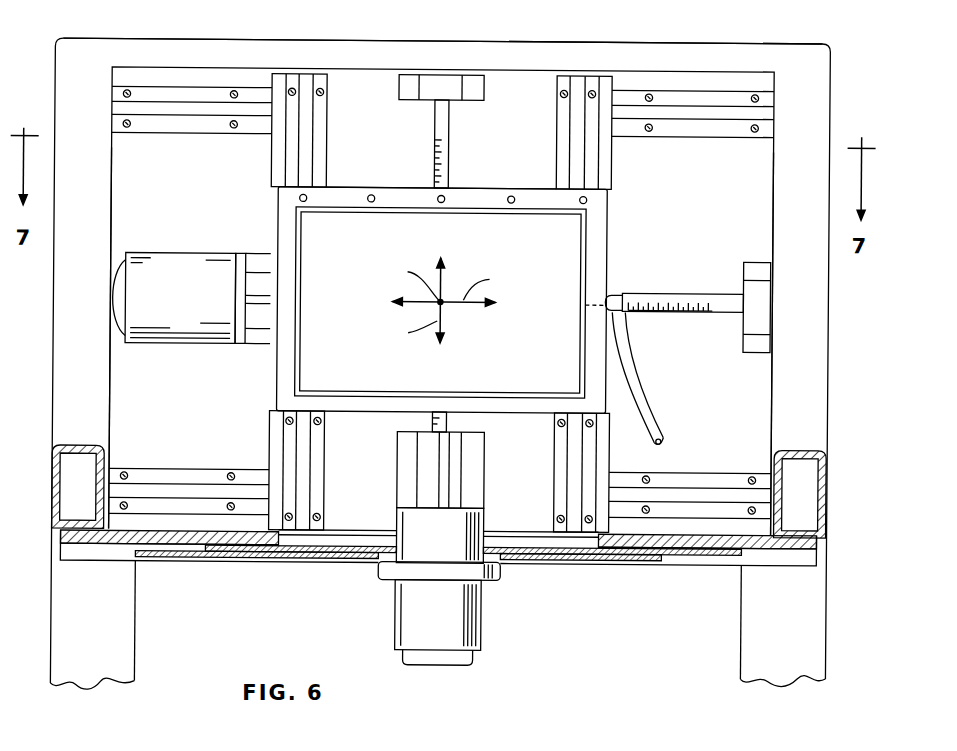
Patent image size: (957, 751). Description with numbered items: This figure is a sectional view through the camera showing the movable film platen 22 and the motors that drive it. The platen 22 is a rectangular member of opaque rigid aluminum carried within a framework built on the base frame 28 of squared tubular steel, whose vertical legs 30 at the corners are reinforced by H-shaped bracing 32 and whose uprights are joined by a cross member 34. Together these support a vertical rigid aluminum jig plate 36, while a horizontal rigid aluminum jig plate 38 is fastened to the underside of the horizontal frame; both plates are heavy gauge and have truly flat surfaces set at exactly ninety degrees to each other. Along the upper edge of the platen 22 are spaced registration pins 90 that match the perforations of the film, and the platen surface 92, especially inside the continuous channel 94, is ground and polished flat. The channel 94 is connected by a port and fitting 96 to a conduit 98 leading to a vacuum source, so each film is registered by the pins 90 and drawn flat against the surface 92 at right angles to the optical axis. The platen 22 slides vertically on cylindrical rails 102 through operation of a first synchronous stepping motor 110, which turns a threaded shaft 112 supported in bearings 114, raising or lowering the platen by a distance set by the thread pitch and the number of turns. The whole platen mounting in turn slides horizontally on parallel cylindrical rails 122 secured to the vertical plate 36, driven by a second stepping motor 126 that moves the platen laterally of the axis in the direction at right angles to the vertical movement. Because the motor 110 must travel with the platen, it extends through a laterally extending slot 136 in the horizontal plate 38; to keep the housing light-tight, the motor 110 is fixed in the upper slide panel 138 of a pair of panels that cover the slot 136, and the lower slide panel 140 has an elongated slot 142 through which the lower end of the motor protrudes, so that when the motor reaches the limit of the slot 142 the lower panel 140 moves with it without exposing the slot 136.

The film platen 22 is at (607, 212).
The base frame 28 is at (88, 448).
The vertical legs 30 is at (133, 661).
The H-shaped bracing 32 is at (98, 384).
The cross member 34 is at (412, 42).
The vertical jig plate 36 is at (113, 158).
The horizontal jig plate 38 is at (700, 546).
The registration pins 90 is at (372, 195).
The platen surface 92 is at (488, 355).
The continuous channel 94 is at (587, 253).
The port and fitting 96 is at (596, 300).
The conduit 98 is at (638, 388).
The cylindrical rails 102 is at (302, 77).
The first synchronous stepping motor 110 is at (487, 640).
The threaded shaft 112 is at (433, 128).
The bearings 114 is at (481, 91).
The horizontal cylindrical rails 122 is at (683, 113).
The second stepping motor 126 is at (183, 257).
The laterally extending slot 136 is at (548, 542).
The upper slide panel 138 is at (373, 547).
The lower slide panel 140 is at (310, 563).
The elongated slot 142 is at (367, 563).